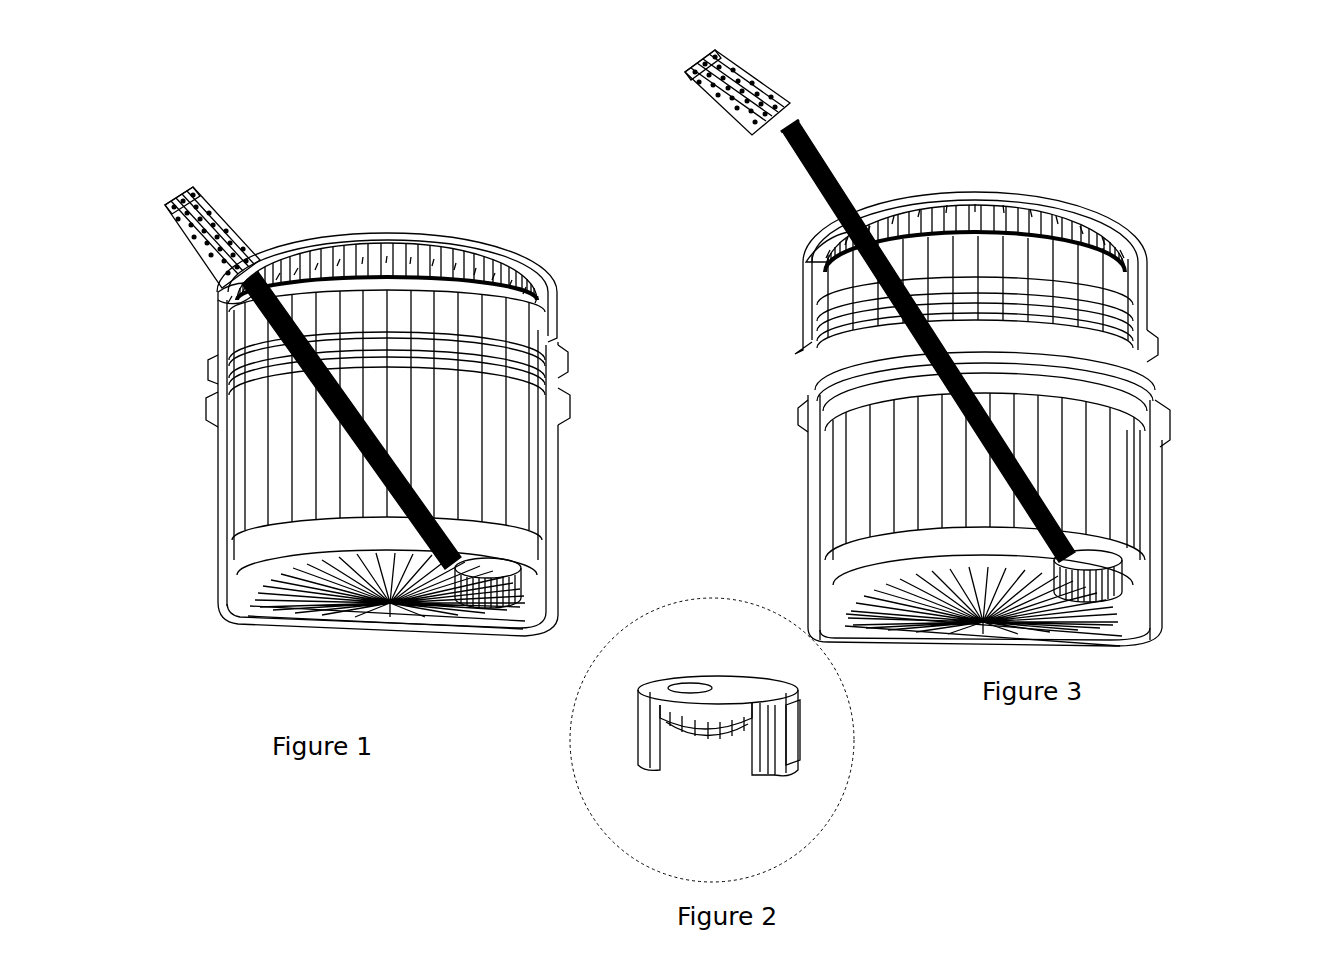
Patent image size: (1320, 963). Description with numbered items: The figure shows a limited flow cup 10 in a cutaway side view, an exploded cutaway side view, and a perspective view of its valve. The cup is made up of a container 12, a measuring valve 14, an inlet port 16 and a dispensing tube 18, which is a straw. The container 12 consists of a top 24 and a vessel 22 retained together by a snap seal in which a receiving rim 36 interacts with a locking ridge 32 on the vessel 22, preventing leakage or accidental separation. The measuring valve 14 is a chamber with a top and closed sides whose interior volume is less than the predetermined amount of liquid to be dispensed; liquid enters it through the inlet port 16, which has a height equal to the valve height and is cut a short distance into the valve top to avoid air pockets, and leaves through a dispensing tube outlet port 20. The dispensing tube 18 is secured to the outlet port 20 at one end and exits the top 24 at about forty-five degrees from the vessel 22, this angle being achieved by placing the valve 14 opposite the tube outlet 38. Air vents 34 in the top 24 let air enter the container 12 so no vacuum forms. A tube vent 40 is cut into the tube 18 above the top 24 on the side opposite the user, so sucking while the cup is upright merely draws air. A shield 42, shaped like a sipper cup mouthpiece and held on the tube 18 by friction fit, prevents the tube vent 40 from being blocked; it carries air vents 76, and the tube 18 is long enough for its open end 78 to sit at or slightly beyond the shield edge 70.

In FIG. 1, the limited flow cup 10 is at (374, 434).
In FIG. 3, the limited flow cup 10 is at (941, 365).
In FIG. 1, the container 12 is at (352, 463).
In FIG. 3, the container 12 is at (999, 463).
In FIG. 1, the measuring valve 14 is at (487, 610).
In FIG. 3, the measuring valve 14 is at (1150, 633).
In FIG. 2, the measuring valve 14 is at (705, 716).
In FIG. 2, the inlet port 16 is at (773, 707).
In FIG. 1, the dispensing tube 18 is at (222, 441).
In FIG. 3, the dispensing tube 18 is at (900, 317).
In FIG. 2, the dispensing tube outlet port 20 is at (668, 687).
In FIG. 1, the vessel 22 is at (220, 550).
In FIG. 3, the vessel 22 is at (1162, 530).
In FIG. 1, the top 24 is at (387, 251).
In FIG. 3, the top 24 is at (1011, 236).
In FIG. 1, the locking ridge 32 is at (564, 398).
In FIG. 3, the locking ridge 32 is at (1168, 432).
In FIG. 1, the air vents 34 is at (372, 232).
In FIG. 3, the air vents 34 is at (961, 195).
In FIG. 1, the receiving rim 36 is at (558, 355).
In FIG. 3, the receiving rim 36 is at (1160, 362).
In FIG. 1, the tube outlet 38 is at (204, 283).
In FIG. 3, the tube outlet 38 is at (833, 230).
In FIG. 1, the tube vent 40 is at (351, 420).
In FIG. 3, the tube vent 40 is at (928, 320).
In FIG. 1, the shield 42 is at (186, 212).
In FIG. 3, the shield 42 is at (699, 90).
In FIG. 1, the shield edge 70 is at (186, 188).
In FIG. 3, the shield edge 70 is at (683, 72).
In FIG. 1, the air vents 76 is at (173, 227).
In FIG. 3, the air vents 76 is at (712, 99).
In FIG. 3, the open end 78 is at (796, 122).